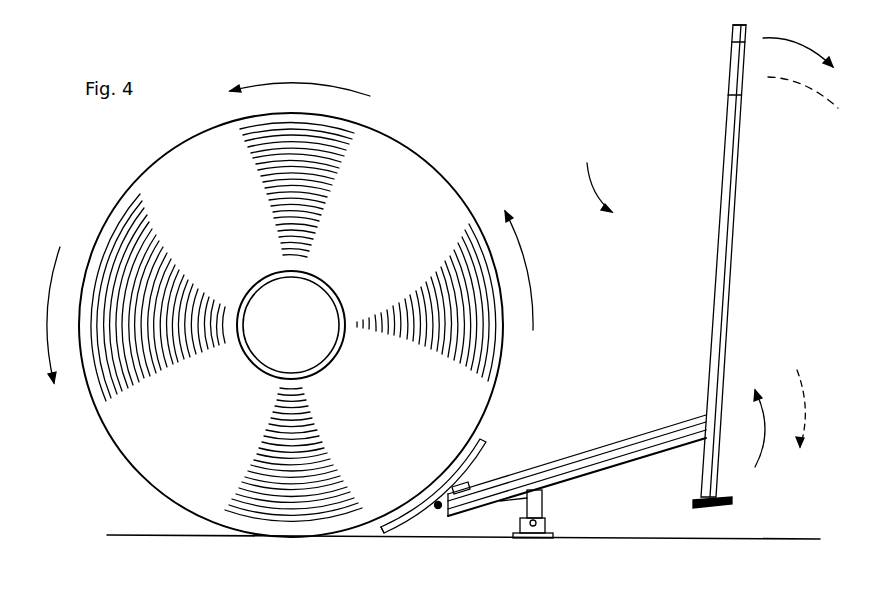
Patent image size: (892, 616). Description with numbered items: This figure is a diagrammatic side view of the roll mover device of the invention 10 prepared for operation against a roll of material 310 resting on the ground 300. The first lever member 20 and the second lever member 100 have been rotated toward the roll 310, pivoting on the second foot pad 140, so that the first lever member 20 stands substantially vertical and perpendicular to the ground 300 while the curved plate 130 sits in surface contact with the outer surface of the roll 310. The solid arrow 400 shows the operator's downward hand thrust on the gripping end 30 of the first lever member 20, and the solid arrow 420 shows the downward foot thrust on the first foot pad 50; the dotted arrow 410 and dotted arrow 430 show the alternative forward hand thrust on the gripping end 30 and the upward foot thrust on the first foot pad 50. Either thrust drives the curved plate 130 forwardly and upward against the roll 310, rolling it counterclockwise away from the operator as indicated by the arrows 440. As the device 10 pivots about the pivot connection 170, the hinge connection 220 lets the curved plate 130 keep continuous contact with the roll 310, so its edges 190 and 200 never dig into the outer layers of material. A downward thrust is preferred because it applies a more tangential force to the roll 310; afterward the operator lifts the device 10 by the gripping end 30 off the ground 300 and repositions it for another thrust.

The device of the invention 10 is at (594, 176).
The first lever member 20 is at (740, 257).
The gripping end 30 is at (728, 63).
The first foot pad 50 is at (730, 504).
The second lever member 100 is at (667, 427).
The curved plate 130 is at (443, 501).
The second foot pad 140 is at (539, 540).
The pivot connection 170 is at (562, 543).
The edge of the curved plate 190 is at (481, 447).
The edge of the curved plate 200 is at (384, 537).
The hinge connection 220 is at (432, 508).
The ground 300 is at (790, 540).
The roll of material 310 is at (412, 178).
The solid arrow 400 is at (807, 40).
The dotted arrow 410 is at (813, 88).
The solid arrow 420 is at (770, 378).
The dotted arrow 430 is at (808, 402).
The arrows 440 is at (297, 80).